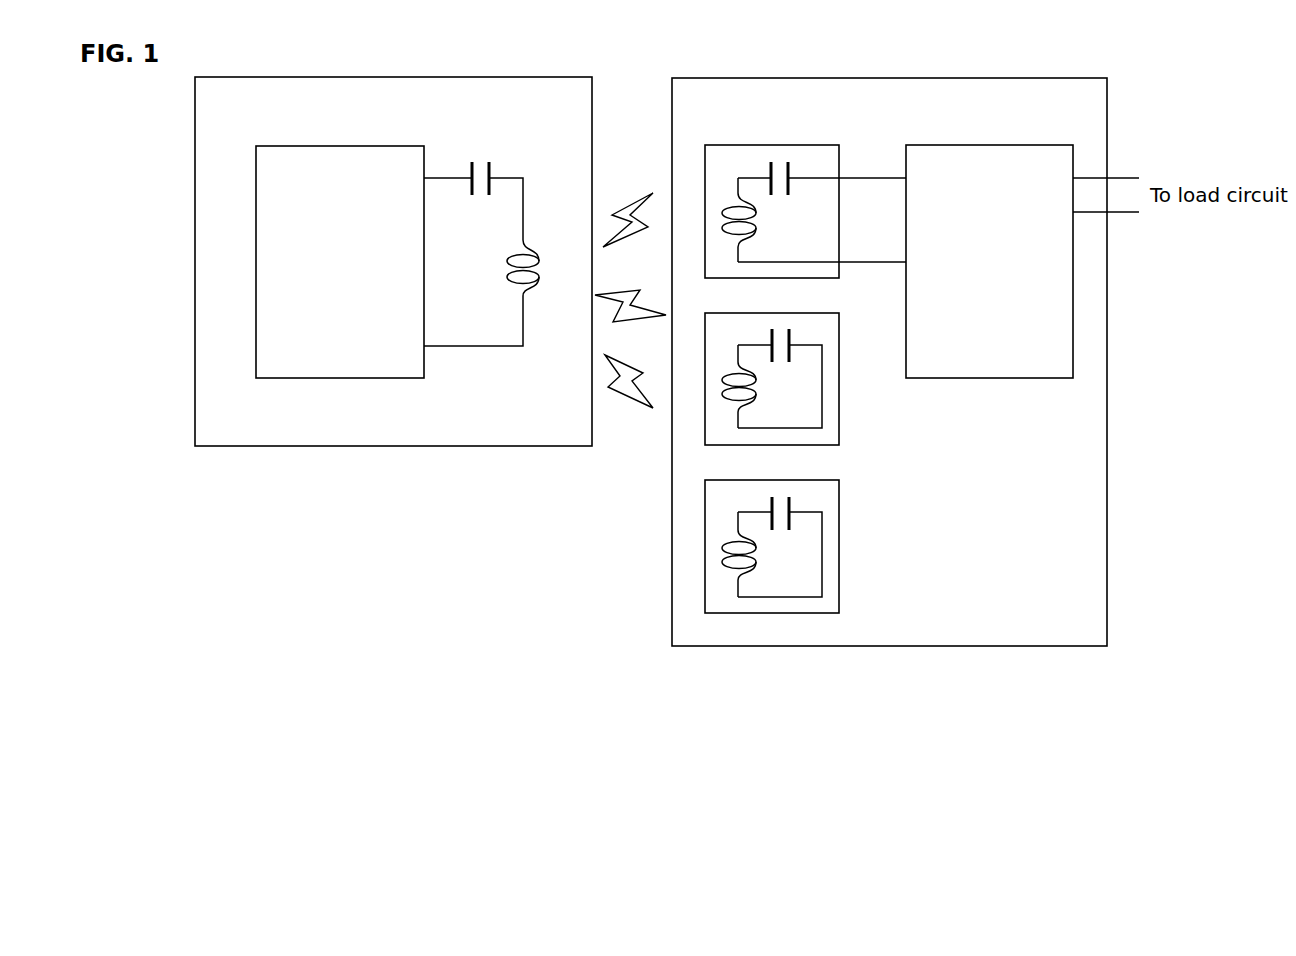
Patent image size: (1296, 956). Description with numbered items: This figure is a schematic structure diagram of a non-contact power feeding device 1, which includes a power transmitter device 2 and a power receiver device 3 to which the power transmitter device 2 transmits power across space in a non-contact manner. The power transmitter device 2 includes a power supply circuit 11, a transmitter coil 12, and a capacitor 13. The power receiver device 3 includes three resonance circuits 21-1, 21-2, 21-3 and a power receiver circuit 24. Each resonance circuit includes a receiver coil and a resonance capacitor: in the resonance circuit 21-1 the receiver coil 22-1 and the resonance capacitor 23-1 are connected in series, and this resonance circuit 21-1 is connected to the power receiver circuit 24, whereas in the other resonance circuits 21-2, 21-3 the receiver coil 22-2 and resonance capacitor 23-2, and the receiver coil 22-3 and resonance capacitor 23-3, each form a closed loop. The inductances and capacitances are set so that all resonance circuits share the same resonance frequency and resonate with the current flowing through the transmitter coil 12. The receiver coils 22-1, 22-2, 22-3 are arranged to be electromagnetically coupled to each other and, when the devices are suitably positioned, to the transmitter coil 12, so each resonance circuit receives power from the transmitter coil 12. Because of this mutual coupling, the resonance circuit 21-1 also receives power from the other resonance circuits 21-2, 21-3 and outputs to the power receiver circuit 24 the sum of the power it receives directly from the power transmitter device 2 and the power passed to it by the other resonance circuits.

The non-contact power feeding device 1 is at (956, 704).
The power transmitter device 2 is at (492, 448).
The power receiver device 3 is at (1037, 648).
The power supply circuit 11 is at (280, 380).
The transmitter coil 12 is at (532, 298).
The capacitor 13 is at (482, 158).
The resonance circuit 21-1 is at (839, 152).
The resonance circuit 21-2 is at (839, 435).
The resonance circuit 21-3 is at (839, 602).
The receiver coil 22-1 is at (762, 218).
The receiver coil 22-2 is at (757, 390).
The receiver coil 22-3 is at (757, 558).
The resonance capacitor 23-1 is at (780, 155).
The resonance capacitor 23-2 is at (793, 337).
The resonance capacitor 23-3 is at (793, 504).
The power receiver circuit 24 is at (1015, 380).